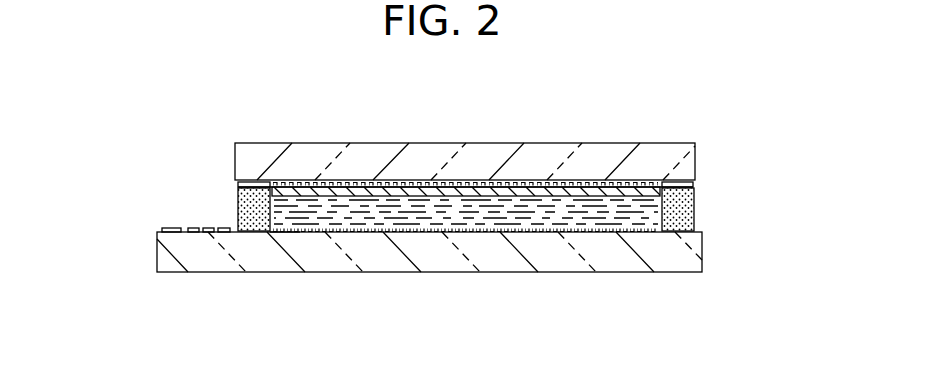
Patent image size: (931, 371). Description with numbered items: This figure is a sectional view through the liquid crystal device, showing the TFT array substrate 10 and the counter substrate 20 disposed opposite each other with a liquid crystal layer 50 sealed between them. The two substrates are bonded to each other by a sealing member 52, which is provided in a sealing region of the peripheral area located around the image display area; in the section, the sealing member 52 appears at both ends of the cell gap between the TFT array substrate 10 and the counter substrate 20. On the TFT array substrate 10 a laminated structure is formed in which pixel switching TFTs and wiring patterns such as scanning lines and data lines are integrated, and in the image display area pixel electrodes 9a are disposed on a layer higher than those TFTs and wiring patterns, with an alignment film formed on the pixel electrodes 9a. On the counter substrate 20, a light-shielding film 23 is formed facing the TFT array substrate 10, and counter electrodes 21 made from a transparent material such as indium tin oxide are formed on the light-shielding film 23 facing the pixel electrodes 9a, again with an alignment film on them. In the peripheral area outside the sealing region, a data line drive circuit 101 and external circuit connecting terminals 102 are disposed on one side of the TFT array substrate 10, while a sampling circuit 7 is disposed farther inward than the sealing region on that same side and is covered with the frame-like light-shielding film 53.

The counter substrate 20 is at (428, 152).
The counter electrodes 21 is at (325, 184).
The light-shielding film 23 is at (518, 194).
The liquid crystal layer 50 is at (419, 213).
The pixel electrodes 9a is at (321, 229).
The sealing member 52 is at (245, 207).
The frame-like light-shielding film 53 is at (280, 184).
The TFT array substrate 10 is at (495, 263).
The sampling circuit 7 is at (277, 233).
The data line drive circuit 101 is at (211, 228).
The external circuit connecting terminals 102 is at (170, 227).